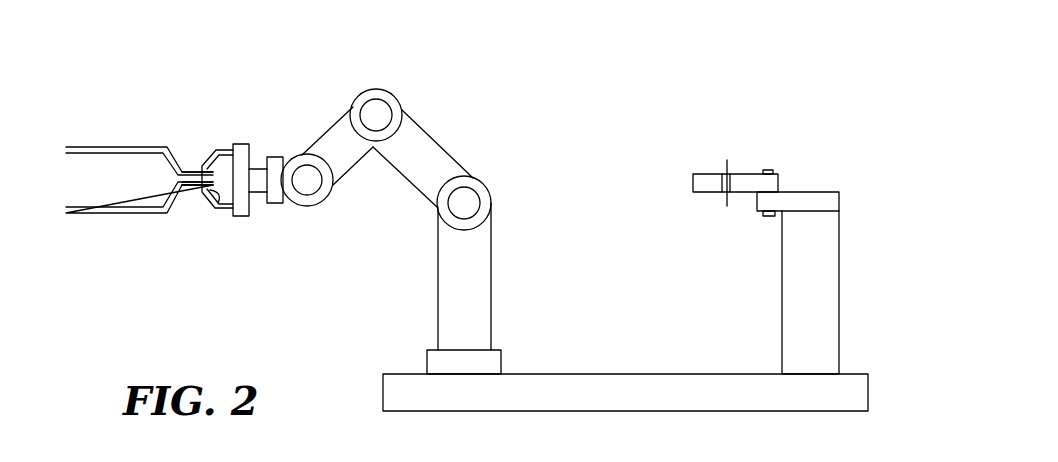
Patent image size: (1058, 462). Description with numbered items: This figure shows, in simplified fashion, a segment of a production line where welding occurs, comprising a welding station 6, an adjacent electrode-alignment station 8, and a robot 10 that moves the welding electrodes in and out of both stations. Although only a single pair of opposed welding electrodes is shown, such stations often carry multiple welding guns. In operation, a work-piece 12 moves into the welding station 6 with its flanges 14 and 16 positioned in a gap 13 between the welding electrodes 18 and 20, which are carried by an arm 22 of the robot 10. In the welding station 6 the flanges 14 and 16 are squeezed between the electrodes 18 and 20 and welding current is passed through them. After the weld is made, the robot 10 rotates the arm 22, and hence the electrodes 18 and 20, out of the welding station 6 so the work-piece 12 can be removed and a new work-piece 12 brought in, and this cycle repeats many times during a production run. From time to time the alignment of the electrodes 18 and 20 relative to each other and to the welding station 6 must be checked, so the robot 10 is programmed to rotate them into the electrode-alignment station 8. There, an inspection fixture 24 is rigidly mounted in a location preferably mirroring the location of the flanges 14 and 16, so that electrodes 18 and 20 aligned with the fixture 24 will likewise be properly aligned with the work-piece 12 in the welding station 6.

The welding station 6 is at (260, 91).
The electrode-alignment station 8 is at (737, 143).
The robot 10 is at (517, 131).
The work-piece 12 is at (135, 147).
The gap 13 is at (215, 185).
The flange 14 is at (188, 172).
The flange 16 is at (188, 190).
The welding electrode 18 is at (221, 149).
The welding electrode 20 is at (229, 218).
The arm 22 is at (427, 130).
The inspection fixture 24 is at (708, 174).